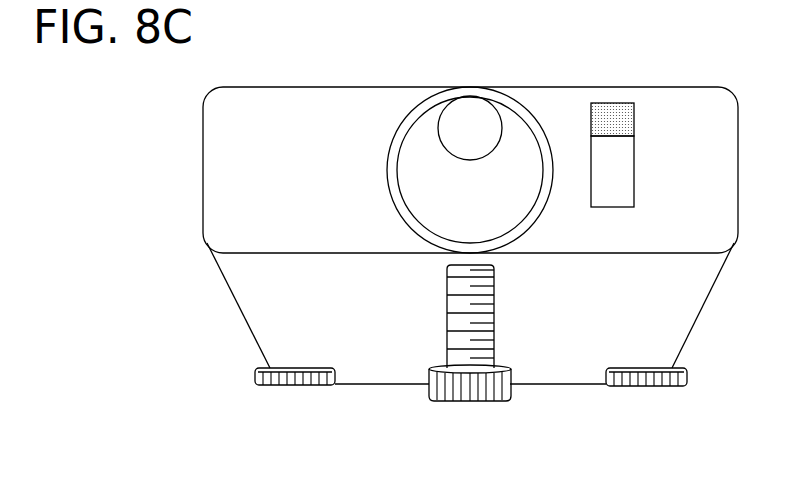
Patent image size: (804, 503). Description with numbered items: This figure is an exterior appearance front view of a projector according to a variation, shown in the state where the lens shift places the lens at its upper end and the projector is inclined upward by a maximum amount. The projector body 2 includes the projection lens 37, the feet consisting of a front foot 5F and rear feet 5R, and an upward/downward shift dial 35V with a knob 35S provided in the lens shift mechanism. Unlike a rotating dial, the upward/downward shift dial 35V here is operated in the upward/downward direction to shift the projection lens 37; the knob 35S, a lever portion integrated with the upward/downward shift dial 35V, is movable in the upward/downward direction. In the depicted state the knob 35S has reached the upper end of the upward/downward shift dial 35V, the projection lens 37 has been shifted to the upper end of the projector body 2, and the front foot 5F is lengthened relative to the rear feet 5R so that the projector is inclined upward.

The projector body 2 is at (645, 87).
The projection lens 37 is at (472, 110).
The knob 35S is at (625, 120).
The upward/downward shift dial 35V is at (625, 172).
The front foot 5F is at (468, 395).
The rear feet 5R is at (292, 377).